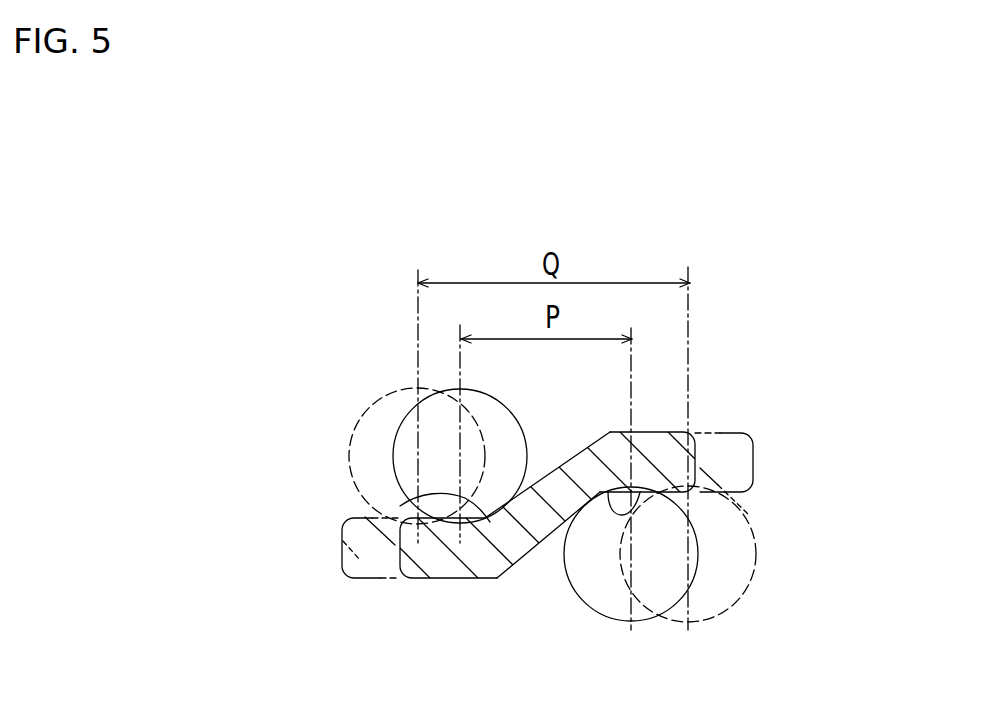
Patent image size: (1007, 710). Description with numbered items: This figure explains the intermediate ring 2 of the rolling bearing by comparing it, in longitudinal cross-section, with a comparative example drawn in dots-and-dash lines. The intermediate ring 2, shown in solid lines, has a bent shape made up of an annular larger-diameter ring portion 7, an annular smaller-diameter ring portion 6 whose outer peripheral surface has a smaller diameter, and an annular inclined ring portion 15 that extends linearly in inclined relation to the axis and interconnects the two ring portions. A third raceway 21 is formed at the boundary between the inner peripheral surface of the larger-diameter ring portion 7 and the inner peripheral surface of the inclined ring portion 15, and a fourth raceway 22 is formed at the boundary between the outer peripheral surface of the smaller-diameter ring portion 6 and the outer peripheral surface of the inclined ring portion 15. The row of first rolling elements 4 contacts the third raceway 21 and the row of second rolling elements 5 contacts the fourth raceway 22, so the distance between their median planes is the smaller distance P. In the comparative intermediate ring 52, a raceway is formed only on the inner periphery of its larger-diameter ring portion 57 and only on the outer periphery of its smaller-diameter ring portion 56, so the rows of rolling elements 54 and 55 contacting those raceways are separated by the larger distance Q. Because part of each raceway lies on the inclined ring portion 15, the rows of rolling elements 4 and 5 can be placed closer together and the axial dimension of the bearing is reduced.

The intermediate ring 2 is at (501, 513).
The first rolling elements 4 is at (700, 540).
The second rolling elements 5 is at (394, 480).
The smaller-diameter ring portion 6 is at (393, 558).
The larger-diameter ring portion 7 is at (700, 460).
The inclined ring portion 15 is at (555, 495).
The third raceway 21 is at (625, 507).
The fourth raceway 22 is at (405, 517).
The intermediate ring 52 is at (368, 580).
The rolling elements 54 is at (753, 580).
The rolling elements 55 is at (353, 430).
The smaller-diameter ring portion 56 is at (343, 532).
The larger-diameter ring portion 57 is at (755, 478).